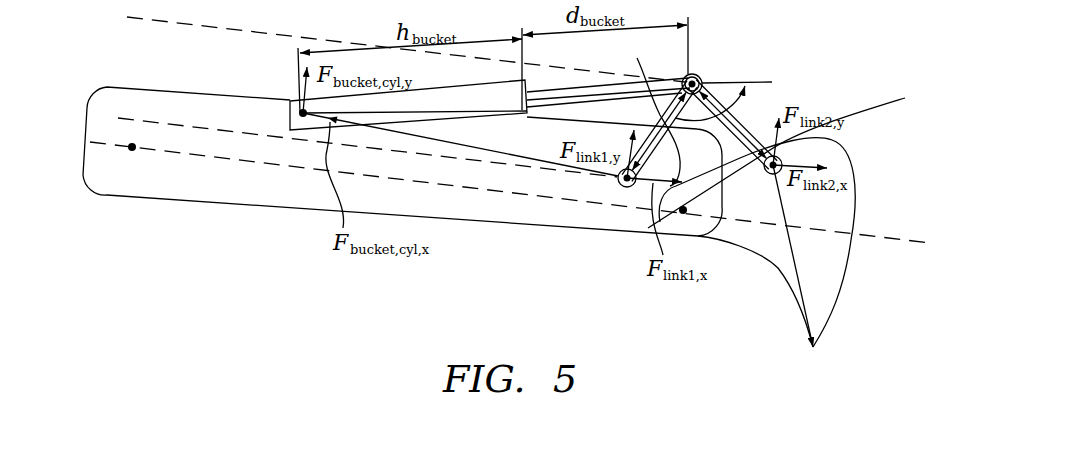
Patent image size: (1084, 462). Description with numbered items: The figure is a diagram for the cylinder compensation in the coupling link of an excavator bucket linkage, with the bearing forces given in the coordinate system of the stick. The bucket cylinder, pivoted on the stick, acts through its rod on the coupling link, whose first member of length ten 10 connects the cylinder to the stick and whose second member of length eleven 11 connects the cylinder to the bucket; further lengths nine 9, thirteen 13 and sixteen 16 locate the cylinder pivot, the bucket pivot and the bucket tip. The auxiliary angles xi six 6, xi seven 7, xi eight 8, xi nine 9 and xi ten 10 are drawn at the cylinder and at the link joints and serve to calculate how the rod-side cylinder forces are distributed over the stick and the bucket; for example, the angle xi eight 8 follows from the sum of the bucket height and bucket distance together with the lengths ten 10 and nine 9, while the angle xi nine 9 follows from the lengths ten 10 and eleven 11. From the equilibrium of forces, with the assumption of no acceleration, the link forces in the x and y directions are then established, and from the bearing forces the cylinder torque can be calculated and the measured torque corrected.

The auxiliary angle ξ 6 is at (541, 93).
The auxiliary angle ξ 7 is at (645, 172).
The auxiliary angle ξ 8 is at (694, 67).
The auxiliary angle ξ9 / length l9 9 is at (737, 63).
The auxiliary angle ξ10 / link length l10 10 is at (793, 64).
The link length l11 11 is at (732, 124).
The length l13 13 is at (776, 163).
The length l16 16 is at (798, 256).